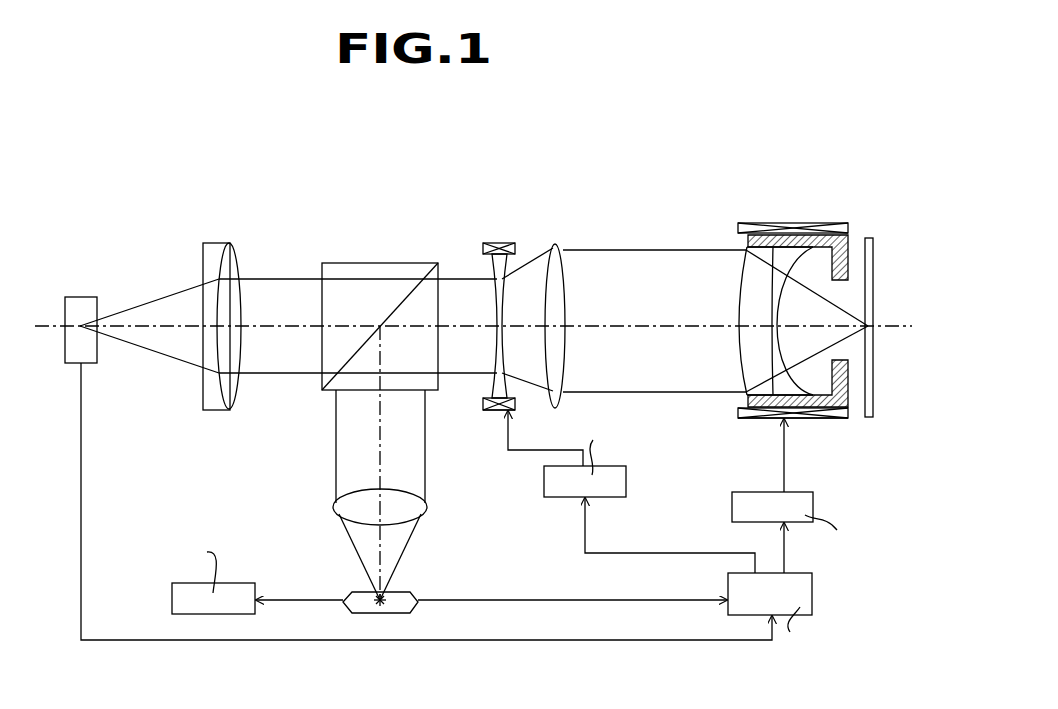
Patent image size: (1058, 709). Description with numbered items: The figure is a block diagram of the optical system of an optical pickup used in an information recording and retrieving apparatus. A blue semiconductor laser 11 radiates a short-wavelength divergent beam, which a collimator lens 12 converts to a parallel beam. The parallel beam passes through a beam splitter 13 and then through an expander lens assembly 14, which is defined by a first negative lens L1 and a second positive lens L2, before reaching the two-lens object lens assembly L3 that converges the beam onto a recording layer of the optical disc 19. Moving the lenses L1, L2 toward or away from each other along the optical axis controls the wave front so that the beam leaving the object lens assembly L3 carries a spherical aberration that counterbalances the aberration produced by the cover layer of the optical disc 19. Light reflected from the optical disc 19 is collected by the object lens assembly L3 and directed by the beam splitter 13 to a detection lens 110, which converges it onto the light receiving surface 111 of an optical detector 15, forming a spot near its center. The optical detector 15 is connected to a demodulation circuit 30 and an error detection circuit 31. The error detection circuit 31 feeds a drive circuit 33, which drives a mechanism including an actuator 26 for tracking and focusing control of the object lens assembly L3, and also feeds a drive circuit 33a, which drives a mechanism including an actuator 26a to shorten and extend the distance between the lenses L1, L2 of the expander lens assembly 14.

The blue semiconductor laser 11 is at (84, 297).
The collimator lens 12 is at (220, 250).
The beam splitter 13 is at (383, 262).
The expander lens assembly 14 is at (492, 158).
The first lens L1 is at (502, 243).
The second lens L2 is at (567, 252).
The object lens assembly L3 is at (727, 238).
The optical disc 19 is at (873, 242).
The actuator 26 is at (748, 420).
The actuator 26a is at (490, 414).
The detection lens 110 is at (337, 504).
The light receiving surface 111 is at (405, 613).
The optical detector 15 is at (411, 578).
The demodulation circuit 30 is at (254, 585).
The error detection circuit 31 is at (813, 577).
The drive circuit 33 is at (813, 505).
The drive circuit 33a is at (543, 497).